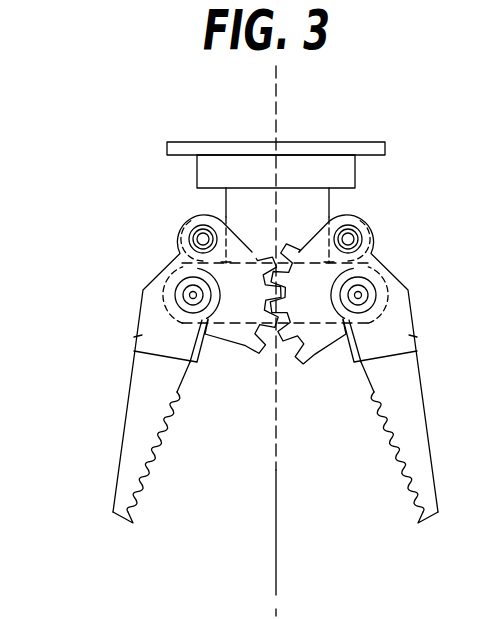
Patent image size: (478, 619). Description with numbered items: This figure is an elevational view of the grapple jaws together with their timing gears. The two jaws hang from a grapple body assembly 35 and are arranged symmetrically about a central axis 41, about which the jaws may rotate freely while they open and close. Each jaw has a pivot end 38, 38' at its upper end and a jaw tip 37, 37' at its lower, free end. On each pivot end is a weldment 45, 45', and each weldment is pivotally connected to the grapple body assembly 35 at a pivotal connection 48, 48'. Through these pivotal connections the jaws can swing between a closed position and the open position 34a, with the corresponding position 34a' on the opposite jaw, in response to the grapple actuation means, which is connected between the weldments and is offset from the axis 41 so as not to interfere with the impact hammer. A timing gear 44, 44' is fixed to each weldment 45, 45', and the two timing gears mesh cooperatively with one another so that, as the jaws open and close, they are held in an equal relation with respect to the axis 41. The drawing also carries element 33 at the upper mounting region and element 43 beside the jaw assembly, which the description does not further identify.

The axis 41 is at (276, 120).
The support frame / mounting plate 33 is at (170, 180).
The grapple body assembly 35 is at (338, 202).
The pivot end 38' is at (155, 240).
The pivot end 38 is at (390, 239).
The pivotal connection 48' is at (141, 295).
The pivotal connection 48 is at (406, 295).
The weldment 45' is at (126, 345).
The weldment 45 is at (410, 347).
The timing gear 44' is at (242, 338).
The timing gear 44 is at (308, 331).
The jaw assembly 43 is at (97, 432).
The jaw tip 37' is at (139, 469).
The jaw tip 37 is at (405, 469).
The serrated gripping edge (left) 34a' is at (167, 484).
The open position 34a is at (378, 484).